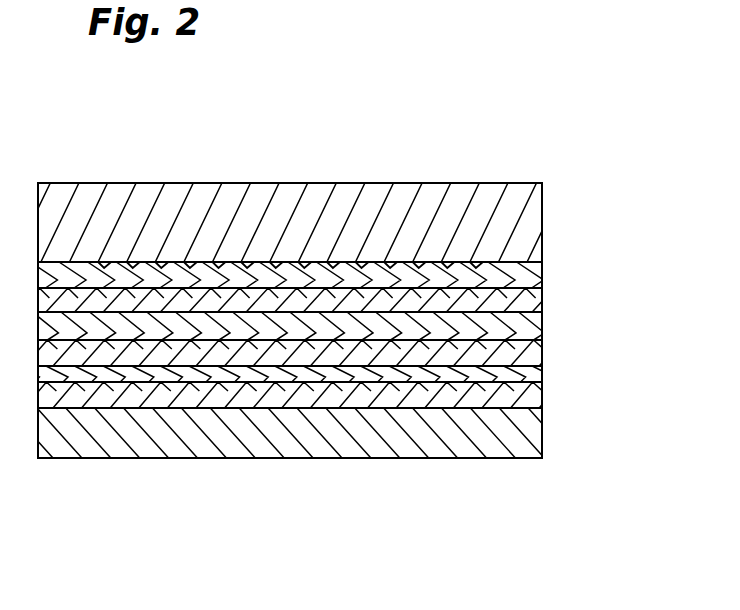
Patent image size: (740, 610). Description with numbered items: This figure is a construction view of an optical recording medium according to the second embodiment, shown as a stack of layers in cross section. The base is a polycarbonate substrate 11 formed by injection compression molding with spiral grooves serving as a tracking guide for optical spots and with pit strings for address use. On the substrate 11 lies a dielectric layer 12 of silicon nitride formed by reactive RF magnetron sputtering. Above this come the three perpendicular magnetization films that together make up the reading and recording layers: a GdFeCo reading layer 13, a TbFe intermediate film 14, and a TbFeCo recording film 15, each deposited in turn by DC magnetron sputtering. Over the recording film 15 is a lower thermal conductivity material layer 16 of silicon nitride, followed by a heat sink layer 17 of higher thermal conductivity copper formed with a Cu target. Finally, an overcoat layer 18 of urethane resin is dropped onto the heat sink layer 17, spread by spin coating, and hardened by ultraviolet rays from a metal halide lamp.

The polycarbonate substrate 11 is at (493, 192).
The dielectric layer 12 is at (513, 273).
The reading layer 13 is at (525, 300).
The intermediate film 14 is at (527, 320).
The recording film 15 is at (530, 348).
The lower thermal conductivity material layer 16 is at (527, 374).
The heat sink layer 17 is at (528, 395).
The overcoat layer 18 is at (478, 443).